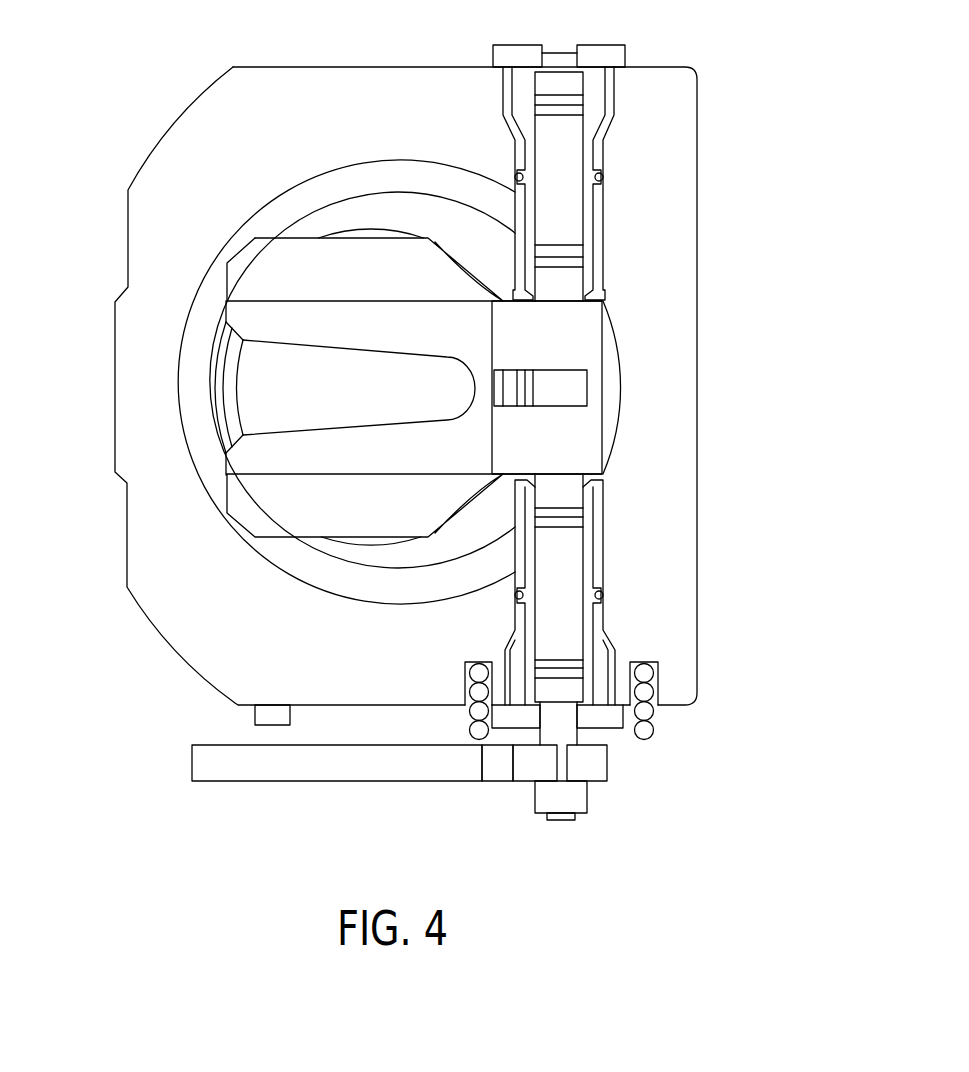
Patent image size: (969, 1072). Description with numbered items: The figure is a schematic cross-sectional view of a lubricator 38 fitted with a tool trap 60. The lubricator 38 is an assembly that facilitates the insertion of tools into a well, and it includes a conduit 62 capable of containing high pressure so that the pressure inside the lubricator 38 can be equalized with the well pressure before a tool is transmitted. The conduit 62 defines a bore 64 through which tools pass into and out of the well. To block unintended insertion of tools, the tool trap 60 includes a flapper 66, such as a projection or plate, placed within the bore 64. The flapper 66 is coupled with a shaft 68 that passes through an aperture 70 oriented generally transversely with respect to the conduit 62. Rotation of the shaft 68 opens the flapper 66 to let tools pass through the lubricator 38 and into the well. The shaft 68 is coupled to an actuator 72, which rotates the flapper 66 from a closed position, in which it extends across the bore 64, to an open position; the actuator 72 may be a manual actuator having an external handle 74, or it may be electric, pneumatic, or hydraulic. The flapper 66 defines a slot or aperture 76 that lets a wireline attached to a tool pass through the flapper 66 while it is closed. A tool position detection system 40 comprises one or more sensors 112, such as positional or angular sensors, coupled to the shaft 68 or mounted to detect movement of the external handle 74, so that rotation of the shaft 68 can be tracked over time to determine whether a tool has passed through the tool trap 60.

The lubricator 38 is at (762, 590).
The tool position detection system 40 is at (368, 769).
The tool trap 60 is at (424, 769).
The conduit 62 is at (515, 252).
The bore 64 is at (225, 402).
The flapper 66 is at (295, 263).
The shaft 68 is at (555, 582).
The aperture 70 is at (603, 508).
The actuator 72 is at (347, 803).
The external handle 74 is at (293, 782).
The slot or aperture 76 is at (298, 400).
The sensor 112 is at (253, 715).